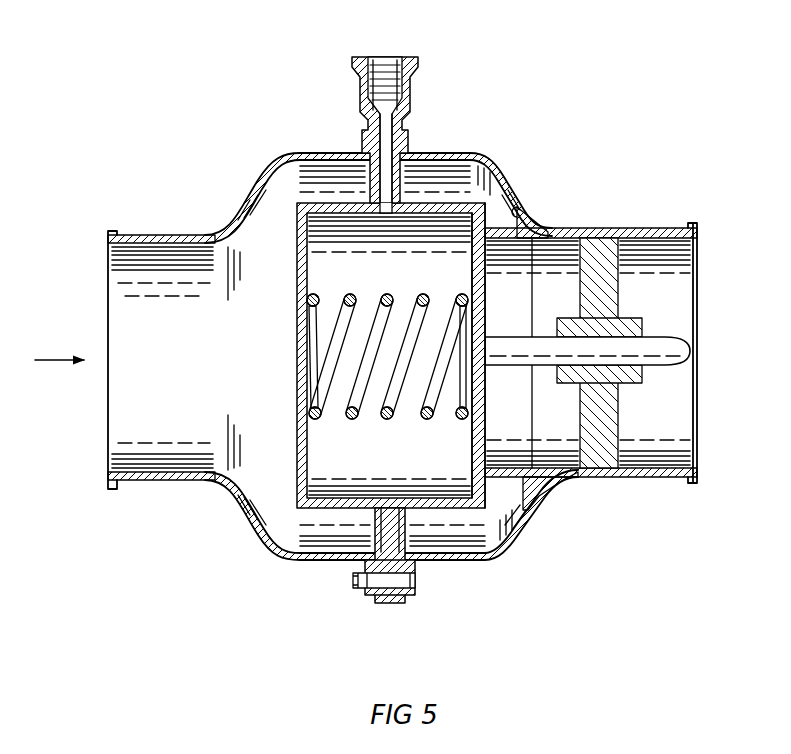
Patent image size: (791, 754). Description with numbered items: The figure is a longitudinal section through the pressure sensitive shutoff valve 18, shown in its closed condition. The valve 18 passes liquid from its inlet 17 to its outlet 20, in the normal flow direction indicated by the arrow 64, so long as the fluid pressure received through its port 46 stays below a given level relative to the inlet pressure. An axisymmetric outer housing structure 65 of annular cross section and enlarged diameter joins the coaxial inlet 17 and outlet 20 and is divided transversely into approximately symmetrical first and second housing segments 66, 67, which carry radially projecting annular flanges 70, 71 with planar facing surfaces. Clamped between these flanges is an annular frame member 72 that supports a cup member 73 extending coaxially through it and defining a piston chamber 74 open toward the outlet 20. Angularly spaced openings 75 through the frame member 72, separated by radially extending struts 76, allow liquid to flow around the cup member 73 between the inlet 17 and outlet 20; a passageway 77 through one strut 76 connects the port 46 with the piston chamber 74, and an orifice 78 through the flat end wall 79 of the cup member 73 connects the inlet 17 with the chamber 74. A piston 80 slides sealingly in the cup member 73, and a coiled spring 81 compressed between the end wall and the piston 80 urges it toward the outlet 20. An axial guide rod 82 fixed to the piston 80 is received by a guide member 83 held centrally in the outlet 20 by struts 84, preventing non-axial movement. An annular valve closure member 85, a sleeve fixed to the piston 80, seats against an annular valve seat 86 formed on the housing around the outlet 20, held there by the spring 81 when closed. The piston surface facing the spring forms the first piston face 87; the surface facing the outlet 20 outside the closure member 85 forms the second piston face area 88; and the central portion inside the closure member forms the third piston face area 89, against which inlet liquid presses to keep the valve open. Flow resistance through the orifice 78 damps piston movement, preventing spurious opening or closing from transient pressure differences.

The inlet 17 is at (125, 470).
The pressure sensitive shutoff valve 18 is at (407, 346).
The outlet 20 is at (662, 468).
The port 46 is at (388, 56).
The arrow 64 is at (52, 362).
The outer housing structure 65 is at (490, 561).
The first housing segment 66 is at (247, 515).
The second housing segment 67 is at (512, 532).
The annular flange 70 is at (372, 600).
The annular flange 71 is at (408, 600).
The annular frame member 72 is at (390, 606).
The cup member 73 is at (294, 263).
The piston chamber 74 is at (373, 280).
The ports or openings 75 is at (388, 543).
The radially extending struts 76 is at (368, 180).
The passageway 77 is at (384, 212).
The orifice 78 is at (297, 355).
The flat end wall 79 is at (297, 390).
The piston 80 is at (491, 428).
The coiled spring 81 is at (386, 420).
The axial guide rod 82 is at (543, 335).
The guide member 83 is at (627, 385).
The struts 84 is at (620, 297).
The annular valve closure member 85 is at (513, 240).
The annular valve seat 86 is at (522, 210).
The first piston face 87 is at (470, 460).
The second piston face area 88 is at (493, 487).
The third piston face area 89 is at (490, 412).